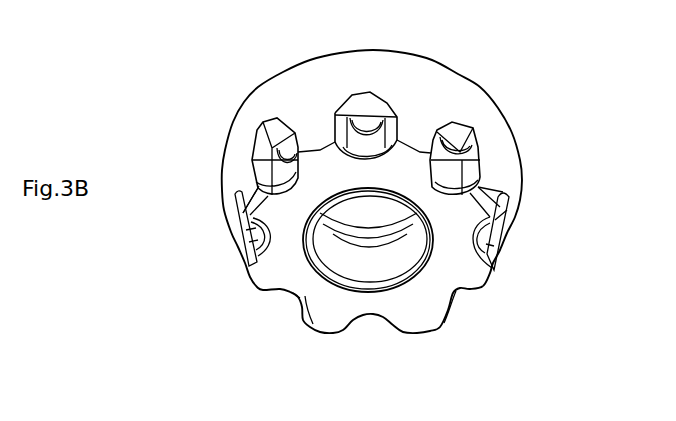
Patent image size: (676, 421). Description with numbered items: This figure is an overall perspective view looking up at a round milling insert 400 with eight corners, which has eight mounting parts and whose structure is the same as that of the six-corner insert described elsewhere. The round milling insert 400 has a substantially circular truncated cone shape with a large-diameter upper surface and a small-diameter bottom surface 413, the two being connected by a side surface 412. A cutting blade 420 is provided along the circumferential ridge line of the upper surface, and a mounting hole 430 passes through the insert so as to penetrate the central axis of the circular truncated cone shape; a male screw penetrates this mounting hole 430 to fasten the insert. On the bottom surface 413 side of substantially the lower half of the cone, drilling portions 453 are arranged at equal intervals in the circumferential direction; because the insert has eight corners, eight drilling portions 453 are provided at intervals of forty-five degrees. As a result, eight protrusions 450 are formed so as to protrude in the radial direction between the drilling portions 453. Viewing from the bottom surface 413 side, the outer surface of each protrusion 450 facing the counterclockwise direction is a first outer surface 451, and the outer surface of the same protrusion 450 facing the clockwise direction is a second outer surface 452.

The round milling insert 400 is at (233, 26).
The side surface 412 is at (500, 145).
The bottom surface 413 is at (413, 313).
The cutting blade 420 is at (500, 103).
The mounting hole 430 is at (368, 257).
The protrusion 450 is at (413, 127).
The first outer surface 451 is at (390, 127).
The second outer surface 452 is at (455, 115).
The drilling portion 453 is at (360, 112).